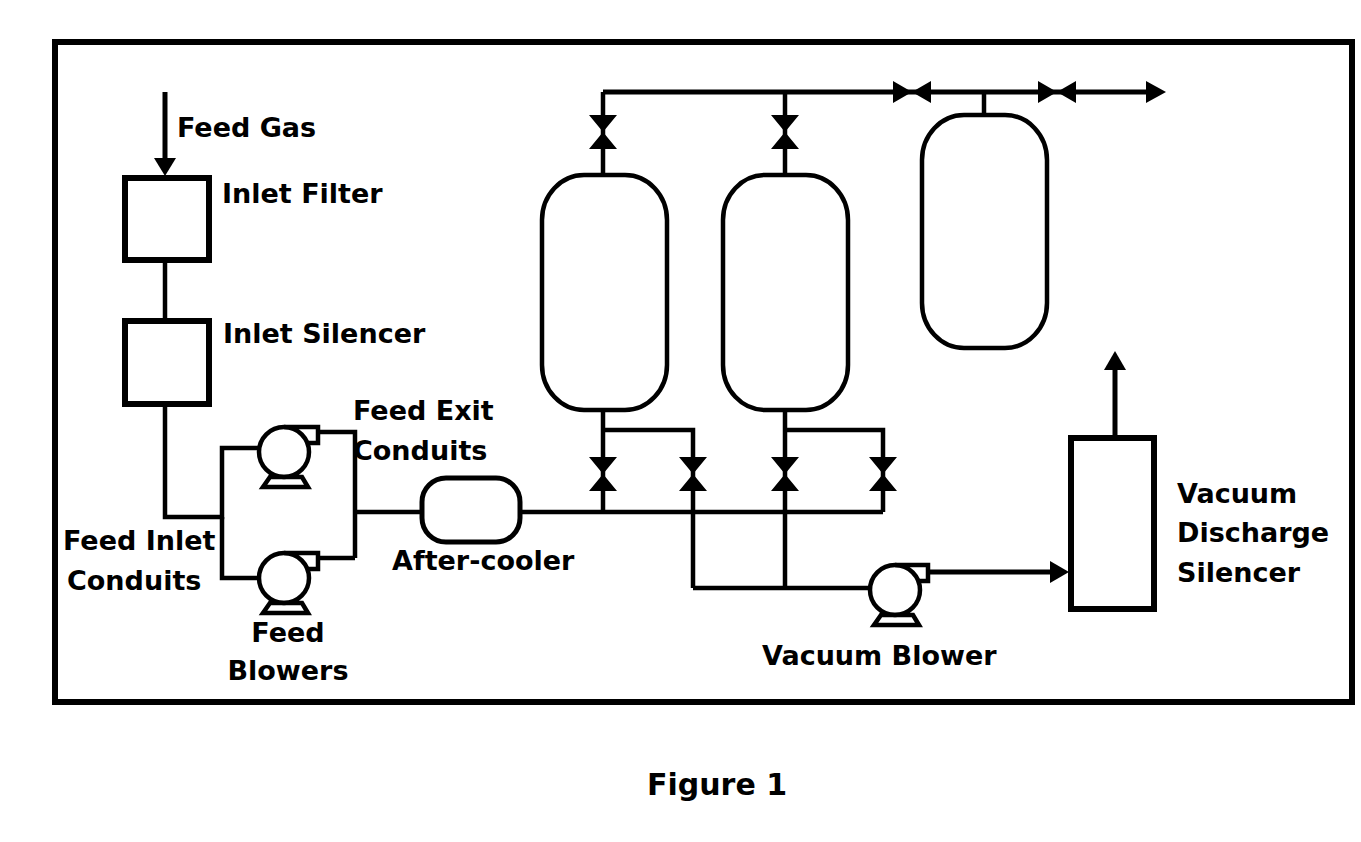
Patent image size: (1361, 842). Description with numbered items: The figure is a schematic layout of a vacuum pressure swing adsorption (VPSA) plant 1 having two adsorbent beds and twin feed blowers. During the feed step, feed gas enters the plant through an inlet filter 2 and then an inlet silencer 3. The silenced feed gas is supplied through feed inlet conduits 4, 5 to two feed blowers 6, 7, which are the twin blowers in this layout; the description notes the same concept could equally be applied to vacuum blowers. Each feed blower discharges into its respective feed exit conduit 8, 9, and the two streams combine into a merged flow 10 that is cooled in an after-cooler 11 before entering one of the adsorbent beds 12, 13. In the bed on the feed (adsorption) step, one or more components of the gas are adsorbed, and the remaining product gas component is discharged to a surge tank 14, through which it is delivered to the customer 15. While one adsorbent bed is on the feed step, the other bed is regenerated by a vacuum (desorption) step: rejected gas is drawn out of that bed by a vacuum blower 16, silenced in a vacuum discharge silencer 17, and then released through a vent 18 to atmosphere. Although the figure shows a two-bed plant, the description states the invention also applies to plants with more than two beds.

The VPSA plant 1 is at (703, 372).
The inlet filter 2 is at (167, 219).
The inlet silencer 3 is at (167, 362).
The feed inlet conduit 4 is at (211, 462).
The feed inlet conduit 5 is at (240, 547).
The feed blower 6 is at (288, 457).
The feed blower 7 is at (288, 583).
The feed exit conduit 8 is at (336, 495).
The feed exit conduit 9 is at (336, 542).
The merged flow 10 is at (388, 496).
The after-cooler 11 is at (471, 510).
The adsorbent bed 12 is at (604, 292).
The adsorbent bed 13 is at (785, 292).
The surge tank 14 is at (984, 220).
The customer 15 is at (1237, 134).
The vacuum blower 16 is at (899, 595).
The vacuum discharge silencer 17 is at (1112, 523).
The vent 18 is at (1154, 387).